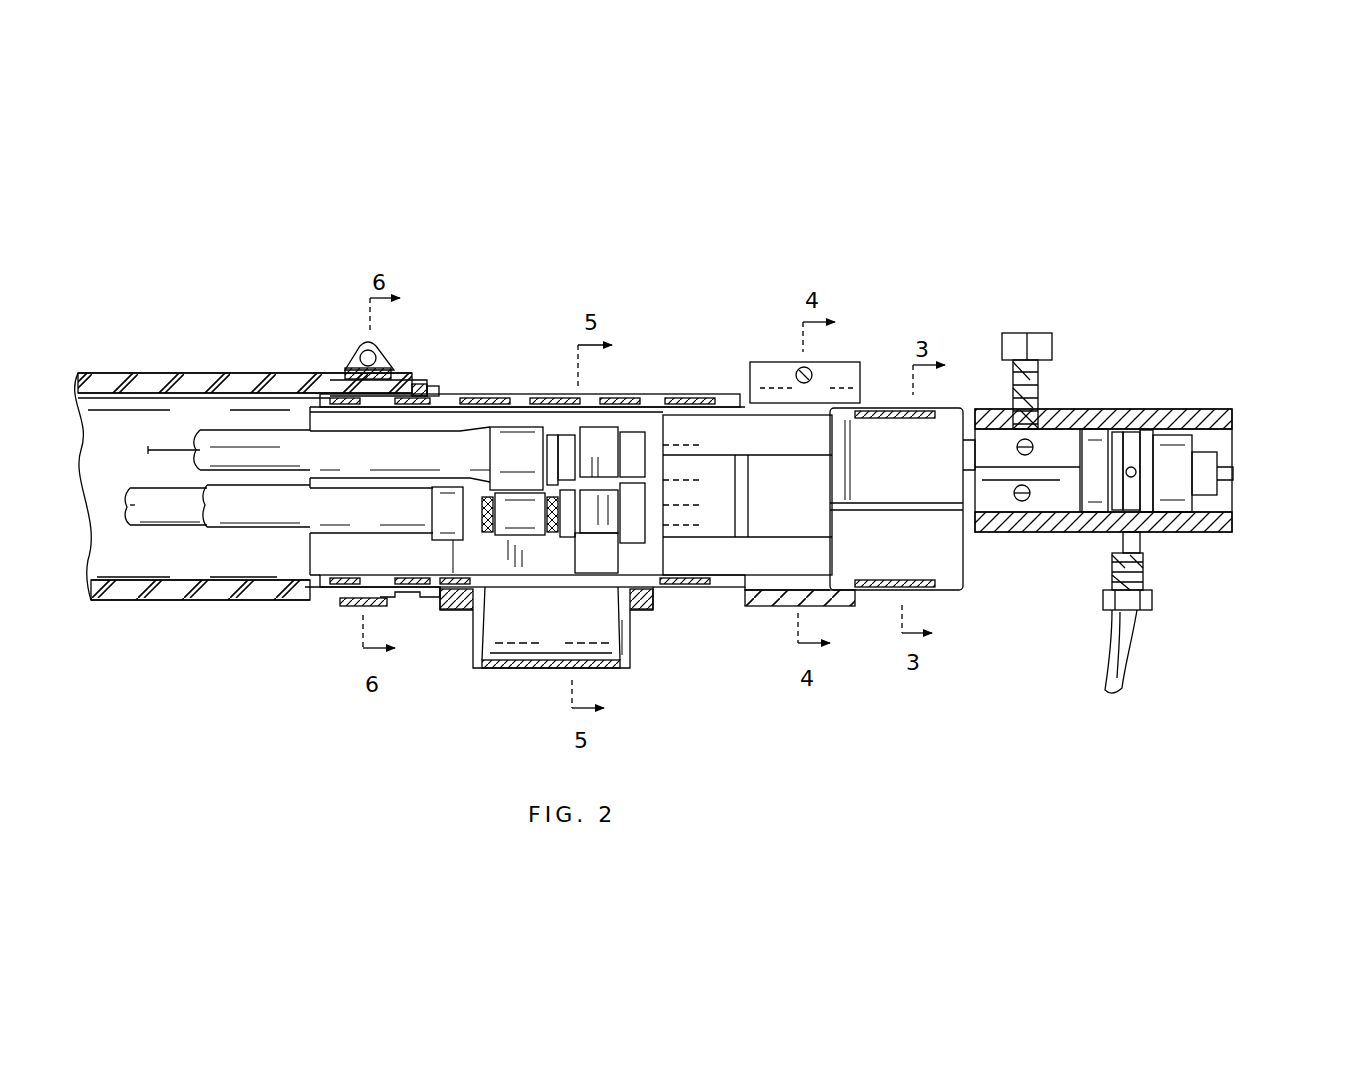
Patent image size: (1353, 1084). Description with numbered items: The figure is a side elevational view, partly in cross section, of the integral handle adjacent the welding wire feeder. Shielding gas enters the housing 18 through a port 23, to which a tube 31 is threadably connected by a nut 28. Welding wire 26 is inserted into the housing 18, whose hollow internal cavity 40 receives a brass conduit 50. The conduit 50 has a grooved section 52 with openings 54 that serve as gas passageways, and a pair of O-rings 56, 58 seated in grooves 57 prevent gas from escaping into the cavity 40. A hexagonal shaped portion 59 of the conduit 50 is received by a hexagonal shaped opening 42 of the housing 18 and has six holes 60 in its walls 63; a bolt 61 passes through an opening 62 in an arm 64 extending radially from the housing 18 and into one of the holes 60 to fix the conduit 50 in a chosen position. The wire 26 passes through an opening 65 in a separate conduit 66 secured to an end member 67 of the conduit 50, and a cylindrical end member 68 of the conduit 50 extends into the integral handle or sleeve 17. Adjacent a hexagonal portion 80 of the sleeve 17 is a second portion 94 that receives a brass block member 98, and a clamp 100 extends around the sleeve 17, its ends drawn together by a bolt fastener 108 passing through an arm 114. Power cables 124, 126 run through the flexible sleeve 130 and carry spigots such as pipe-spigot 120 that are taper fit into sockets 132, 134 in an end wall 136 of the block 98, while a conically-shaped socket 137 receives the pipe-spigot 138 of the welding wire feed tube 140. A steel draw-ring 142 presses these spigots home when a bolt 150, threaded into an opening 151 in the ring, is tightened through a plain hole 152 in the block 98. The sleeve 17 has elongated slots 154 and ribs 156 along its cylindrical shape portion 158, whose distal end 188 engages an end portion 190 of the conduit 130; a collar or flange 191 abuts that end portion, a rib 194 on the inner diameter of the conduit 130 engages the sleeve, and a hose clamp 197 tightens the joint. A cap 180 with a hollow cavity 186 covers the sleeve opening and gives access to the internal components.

The flexible sleeve 130 is at (130, 380).
The welding wire feed tube 140 is at (232, 440).
The welding wire 26 is at (162, 450).
The hose clamp 197 is at (364, 340).
The end portion 190 is at (332, 375).
The collar 191 is at (430, 386).
The cylindrical shape portion 158 is at (465, 393).
The integral handle 17 is at (477, 397).
The elongated slots 154 is at (492, 397).
The ribs 156 is at (547, 393).
The draw-ring 142 is at (603, 417).
The pipe-spigot 138 is at (668, 410).
The conically-shaped socket 137 is at (692, 438).
The socket 132 is at (705, 510).
The socket 134 is at (793, 514).
The end wall 136 is at (740, 560).
The plain hole 152 is at (740, 545).
The bolt 150 is at (575, 552).
The arm 114 is at (765, 362).
The bolt fastener 108 is at (812, 372).
The second portion 94 is at (843, 590).
The block member 98 is at (805, 582).
The clamp 100 is at (820, 592).
The cylindrical end member 68 is at (873, 445).
The hexagonal portion 80 is at (905, 400).
The cap 180 is at (538, 665).
The hollow cavity 186 is at (628, 672).
The opening 151 is at (567, 560).
The pipe-spigot 120 is at (620, 560).
The distal end 188 is at (342, 604).
The rib 194 is at (405, 597).
The power cable 124 is at (240, 512).
The power cable 126 is at (148, 515).
The conduit 50 is at (988, 440).
The housing 18 is at (1045, 500).
The hexagonal shaped opening 42 is at (1002, 545).
The holes 60 is at (1040, 532).
The walls 63 is at (1100, 555).
The arm 64 is at (1012, 333).
The bolt 61 is at (1053, 340).
The opening 62 is at (1035, 388).
The hexagonal shaped portion 59 is at (1053, 438).
The hollow internal cavity 40 is at (1080, 430).
The O-ring 58 is at (1140, 425).
The grooved section 52 is at (1153, 423).
The separate conduit 66 is at (1185, 500).
The O-ring 56 is at (1165, 423).
The grooves 57 is at (1240, 410).
The opening 65 is at (1210, 490).
The end member 67 is at (1212, 525).
The openings 54 is at (1135, 512).
The nut 28 is at (1148, 604).
The port 23 is at (1105, 600).
The tube 31 is at (1108, 677).